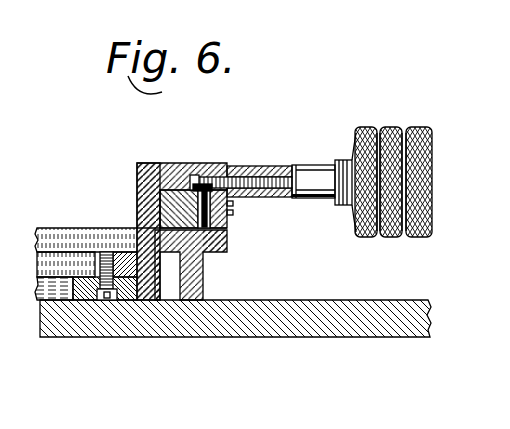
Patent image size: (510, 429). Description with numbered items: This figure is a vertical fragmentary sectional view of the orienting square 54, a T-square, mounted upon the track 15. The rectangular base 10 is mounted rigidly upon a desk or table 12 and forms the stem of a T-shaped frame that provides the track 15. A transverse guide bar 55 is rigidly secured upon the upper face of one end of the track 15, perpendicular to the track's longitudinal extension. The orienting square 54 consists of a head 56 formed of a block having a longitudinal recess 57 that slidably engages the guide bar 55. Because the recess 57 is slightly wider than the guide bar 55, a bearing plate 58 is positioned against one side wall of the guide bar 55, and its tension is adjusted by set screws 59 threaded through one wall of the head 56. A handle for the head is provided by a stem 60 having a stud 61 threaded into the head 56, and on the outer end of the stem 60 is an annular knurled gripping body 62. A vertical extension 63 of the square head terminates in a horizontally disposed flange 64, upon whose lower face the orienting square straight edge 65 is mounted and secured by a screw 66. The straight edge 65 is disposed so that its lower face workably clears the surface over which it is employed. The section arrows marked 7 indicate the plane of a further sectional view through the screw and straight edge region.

The section line 7- 7 is at (30, 286).
The rectangular base 10 is at (204, 280).
The desk or table 12 is at (367, 314).
The track 15 is at (213, 242).
The orienting square 54 is at (268, 99).
The transverse guide bar 55 is at (160, 172).
The head 56 is at (164, 172).
The longitudinal recess 57 is at (160, 208).
The bearing plate 58 is at (234, 213).
The set screws 59 is at (234, 204).
The stem 60 is at (310, 173).
The stud 61 is at (206, 180).
The annular knurled gripping body 62 is at (433, 180).
The vertical extension 63 is at (144, 246).
The flange 64 is at (100, 258).
The straight edge 65 is at (42, 292).
The screw 66 is at (115, 300).